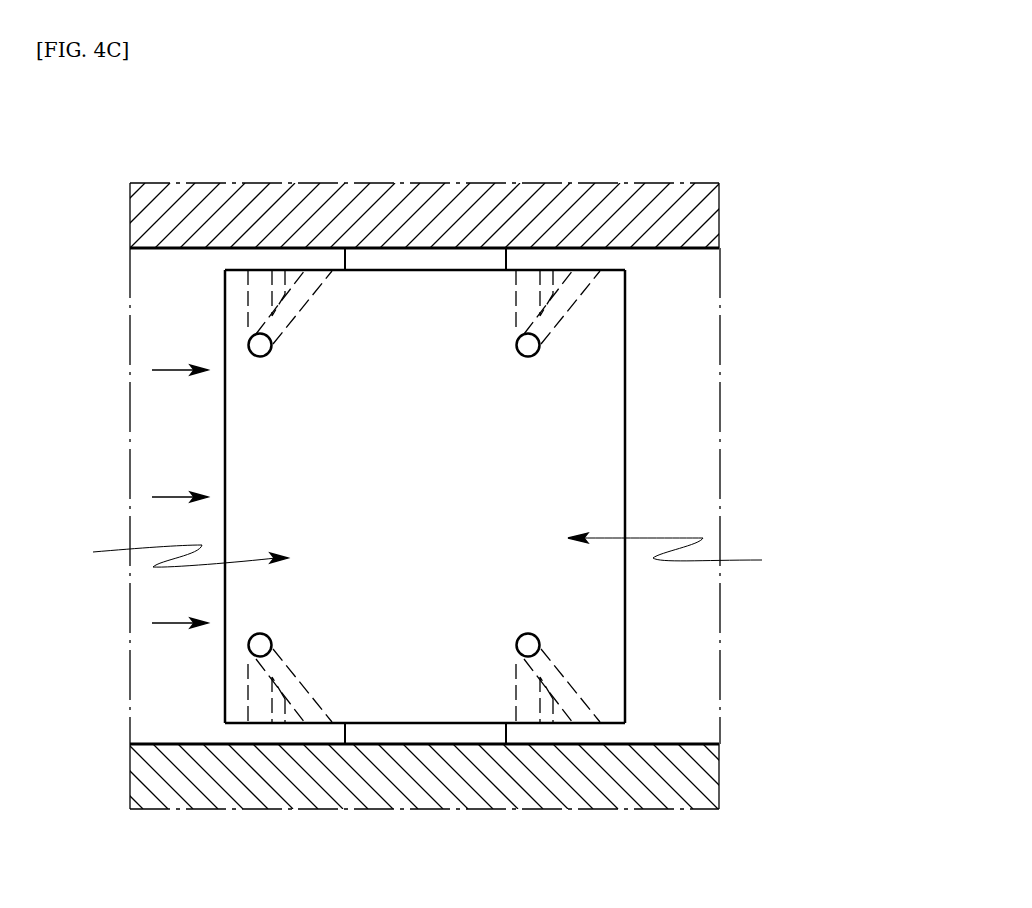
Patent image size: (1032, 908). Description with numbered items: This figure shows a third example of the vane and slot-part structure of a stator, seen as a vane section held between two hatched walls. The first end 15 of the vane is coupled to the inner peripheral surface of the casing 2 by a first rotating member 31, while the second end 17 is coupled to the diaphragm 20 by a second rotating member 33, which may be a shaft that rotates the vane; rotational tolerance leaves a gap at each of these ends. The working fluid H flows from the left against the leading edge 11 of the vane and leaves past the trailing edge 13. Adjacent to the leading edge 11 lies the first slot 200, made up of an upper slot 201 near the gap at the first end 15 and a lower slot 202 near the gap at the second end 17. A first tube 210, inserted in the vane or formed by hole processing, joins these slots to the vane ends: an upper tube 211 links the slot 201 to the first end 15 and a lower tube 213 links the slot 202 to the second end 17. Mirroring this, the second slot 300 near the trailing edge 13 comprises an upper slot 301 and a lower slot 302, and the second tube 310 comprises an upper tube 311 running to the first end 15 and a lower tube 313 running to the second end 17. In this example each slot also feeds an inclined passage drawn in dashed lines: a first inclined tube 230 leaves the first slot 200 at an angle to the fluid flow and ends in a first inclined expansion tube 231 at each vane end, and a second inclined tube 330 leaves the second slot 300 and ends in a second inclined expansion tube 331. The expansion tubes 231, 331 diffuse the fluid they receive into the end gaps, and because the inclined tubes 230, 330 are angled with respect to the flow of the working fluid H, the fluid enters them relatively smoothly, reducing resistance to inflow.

The casing 2 is at (680, 212).
The diaphragm 20 is at (605, 777).
The leading edge 11 is at (225, 523).
The trailing edge 13 is at (625, 495).
The first end 15 is at (242, 268).
The second end 17 is at (240, 723).
The first rotating member 31 is at (413, 258).
The second rotating member 33 is at (438, 733).
The working fluid H is at (173, 371).
The first slot 200 is at (482, 385).
The 1-1 slot 201 is at (262, 345).
The 1-2 slot 202 is at (262, 644).
The first tube 210 is at (486, 455).
The 1-1 tube 211 is at (258, 292).
The 1-2 tube 213 is at (258, 702).
The first inclined tube 230 is at (278, 312).
The first inclined expansion tube 231 is at (308, 283).
The second slot 300 is at (688, 498).
The 2-1 slot 301 is at (516, 346).
The 2-2 slot 302 is at (516, 647).
The second tube 310 is at (712, 498).
The 2-1 tube 311 is at (526, 293).
The 2-2 tube 313 is at (526, 700).
The second inclined tube 330 is at (553, 318).
The second inclined expansion tube 331 is at (567, 287).